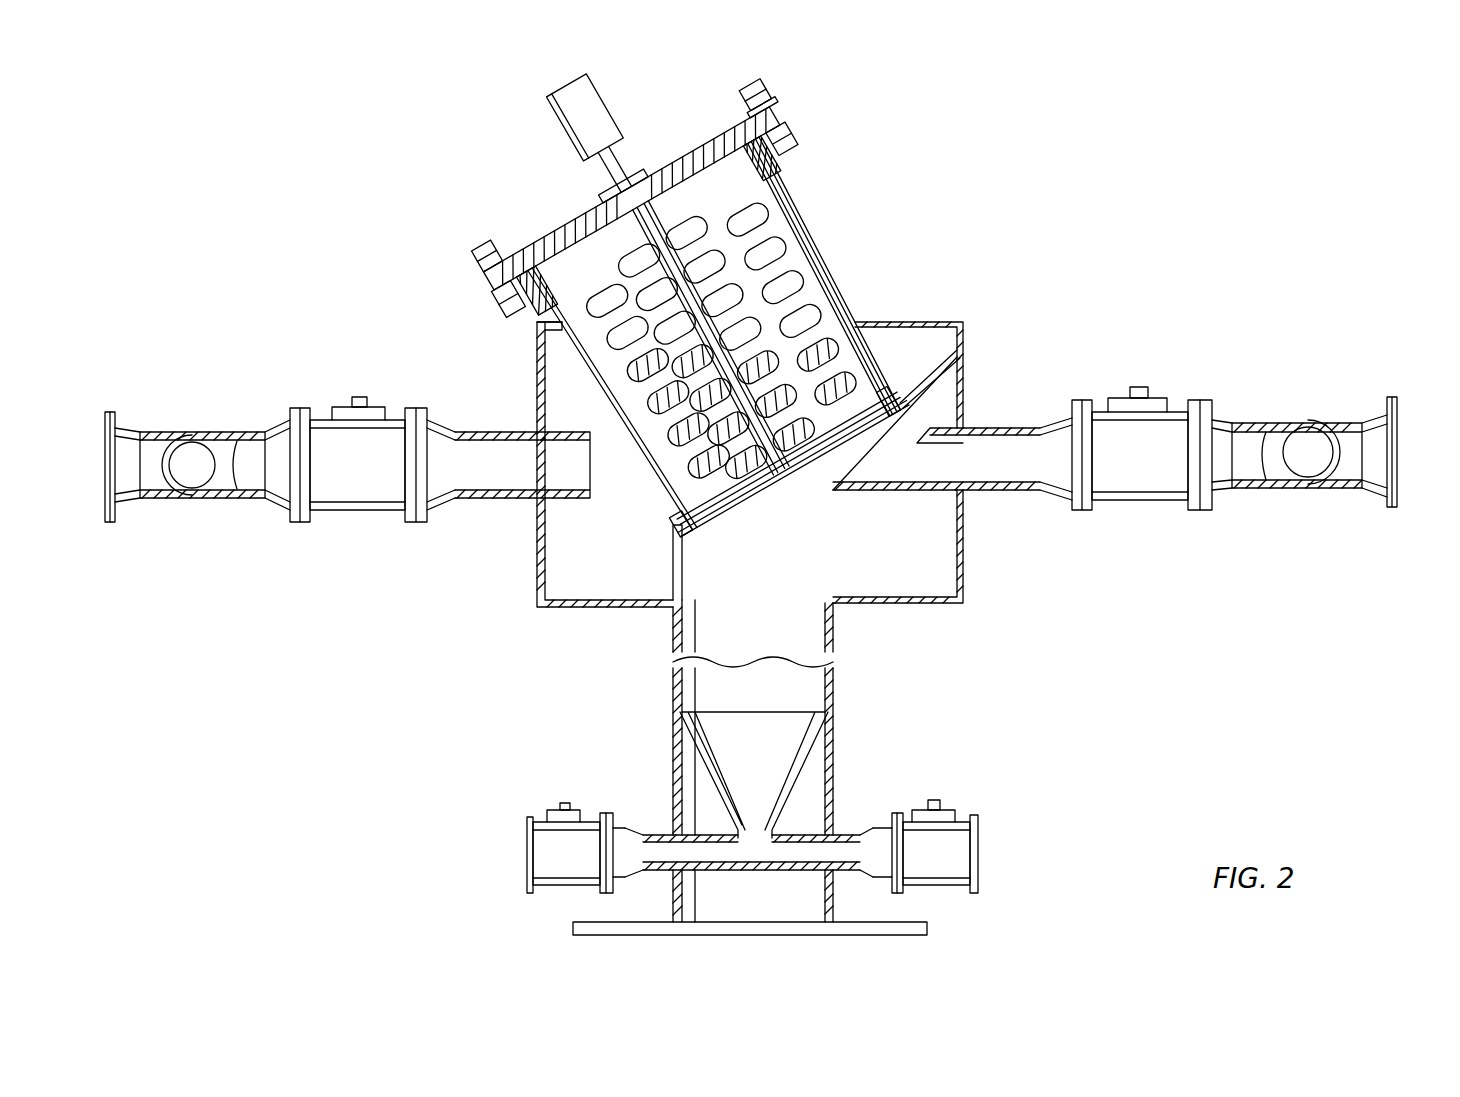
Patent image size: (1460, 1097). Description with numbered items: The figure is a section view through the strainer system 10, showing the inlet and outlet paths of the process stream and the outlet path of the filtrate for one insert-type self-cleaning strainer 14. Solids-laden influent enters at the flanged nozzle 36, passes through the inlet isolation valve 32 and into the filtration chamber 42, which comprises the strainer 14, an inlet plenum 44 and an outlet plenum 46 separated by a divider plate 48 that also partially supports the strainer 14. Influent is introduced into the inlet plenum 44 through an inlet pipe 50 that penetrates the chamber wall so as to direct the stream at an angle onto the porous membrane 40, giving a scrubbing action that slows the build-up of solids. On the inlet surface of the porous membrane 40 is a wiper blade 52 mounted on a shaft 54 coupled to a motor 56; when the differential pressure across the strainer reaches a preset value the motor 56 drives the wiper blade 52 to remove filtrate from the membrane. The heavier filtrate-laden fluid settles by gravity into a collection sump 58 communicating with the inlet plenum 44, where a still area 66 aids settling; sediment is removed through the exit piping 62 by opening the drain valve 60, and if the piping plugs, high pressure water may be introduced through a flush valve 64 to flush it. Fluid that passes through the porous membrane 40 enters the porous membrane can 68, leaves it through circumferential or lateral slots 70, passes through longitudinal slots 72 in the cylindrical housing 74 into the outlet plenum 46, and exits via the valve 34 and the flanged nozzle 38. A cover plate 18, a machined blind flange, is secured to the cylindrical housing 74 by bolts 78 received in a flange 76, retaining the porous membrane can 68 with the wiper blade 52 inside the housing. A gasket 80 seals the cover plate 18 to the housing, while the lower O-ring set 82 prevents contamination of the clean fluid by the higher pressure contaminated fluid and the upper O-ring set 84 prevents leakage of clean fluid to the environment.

The strainer system 10 is at (1076, 264).
The strainer 14 is at (795, 237).
The cover plate 18 is at (707, 143).
The inlet isolation valve 32 is at (1147, 503).
The valve 34 is at (352, 510).
The flanged nozzle 36 is at (1400, 480).
The flanged nozzle 38 is at (110, 522).
The porous membrane 40 is at (887, 417).
The filtration chamber 42 is at (963, 590).
The inlet plenum 44 is at (750, 467).
The outlet plenum 46 is at (557, 540).
The divider plate 48 is at (958, 345).
The inlet pipe 50 is at (897, 488).
The wiper blade 52 is at (773, 483).
The shaft 54 is at (667, 207).
The motor 56 is at (595, 107).
The collection sump 58 is at (782, 745).
The drain valve 60 is at (960, 822).
The exit piping 62 is at (793, 843).
The flush valve 64 is at (537, 830).
The still area 66 is at (770, 636).
The porous membrane can 68 is at (843, 283).
The circumferential or lateral slots 70 is at (535, 350).
The longitudinal slots 72 is at (703, 467).
The cylindrical housing 74 is at (822, 257).
The flange 76 is at (773, 148).
The bolts 78 is at (747, 108).
The gasket 80 is at (550, 218).
The lower O-ring set 82 is at (670, 502).
The upper O-ring set 84 is at (480, 303).